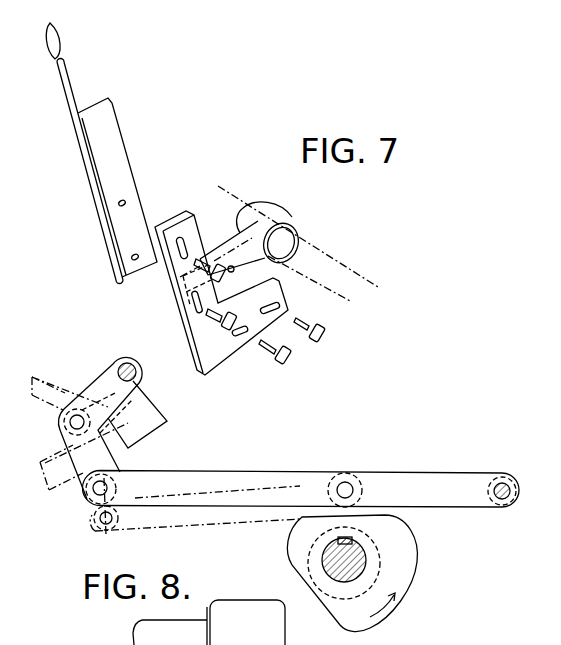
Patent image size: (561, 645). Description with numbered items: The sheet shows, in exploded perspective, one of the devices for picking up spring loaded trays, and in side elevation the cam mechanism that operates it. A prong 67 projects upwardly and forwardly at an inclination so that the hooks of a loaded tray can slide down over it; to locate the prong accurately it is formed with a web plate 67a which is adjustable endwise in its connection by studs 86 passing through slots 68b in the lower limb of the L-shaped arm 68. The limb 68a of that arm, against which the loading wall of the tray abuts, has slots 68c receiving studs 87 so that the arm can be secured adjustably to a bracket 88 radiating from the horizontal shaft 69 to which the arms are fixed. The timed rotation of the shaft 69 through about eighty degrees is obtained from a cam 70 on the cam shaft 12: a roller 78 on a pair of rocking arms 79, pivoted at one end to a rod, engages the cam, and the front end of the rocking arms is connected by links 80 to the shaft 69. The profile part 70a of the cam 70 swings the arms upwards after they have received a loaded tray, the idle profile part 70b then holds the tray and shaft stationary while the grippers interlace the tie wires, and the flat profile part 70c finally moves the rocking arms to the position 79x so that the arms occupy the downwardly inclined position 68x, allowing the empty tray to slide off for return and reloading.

In FIG. 7, the prong 67 is at (65, 80).
In FIG. 7, the web plate 67a is at (115, 152).
In FIG. 7, the L-shaped arm 68 is at (213, 350).
In FIG. 8, the L-shaped arm 68 is at (48, 392).
In FIG. 7, the limb of the arm 68a is at (255, 325).
In FIG. 7, the slots in the lower limb 68b is at (182, 237).
In FIG. 7, the slots in the limb 68c is at (284, 304).
In FIG. 8, the downwardly inclined position of the arms 68x is at (60, 473).
In FIG. 8, the horizontal shaft 69 is at (121, 372).
In FIG. 8, the cam 70 is at (408, 559).
In FIG. 8, the profile part of the cam 70a is at (383, 512).
In FIG. 8, the idle profile part of the cam 70b is at (415, 587).
In FIG. 8, the flat profile part of the cam 70c is at (327, 603).
In FIG. 8, the cam shaft 12 is at (337, 565).
In FIG. 8, the roller 78 is at (335, 478).
In FIG. 8, the rocking arm 79 is at (230, 483).
In FIG. 8, the position of the rocking arms 79x is at (170, 520).
In FIG. 8, the link 80 is at (137, 387).
In FIG. 7, the stud 86 is at (201, 258).
In FIG. 7, the stud 87 is at (317, 341).
In FIG. 7, the bracket 88 is at (283, 262).